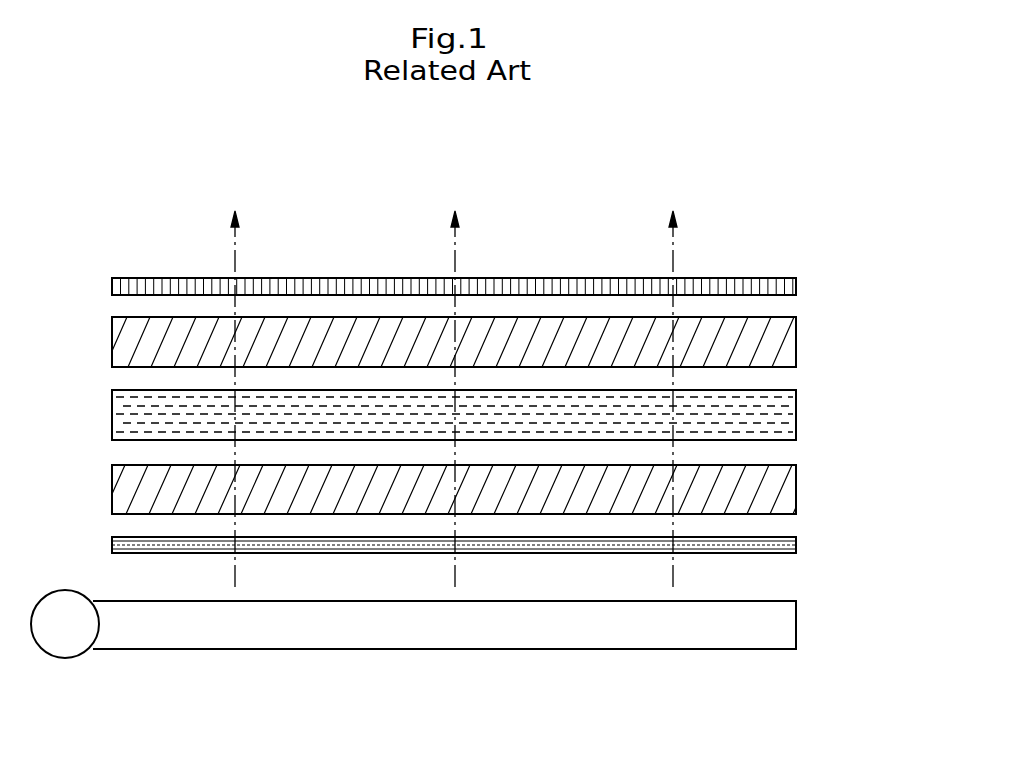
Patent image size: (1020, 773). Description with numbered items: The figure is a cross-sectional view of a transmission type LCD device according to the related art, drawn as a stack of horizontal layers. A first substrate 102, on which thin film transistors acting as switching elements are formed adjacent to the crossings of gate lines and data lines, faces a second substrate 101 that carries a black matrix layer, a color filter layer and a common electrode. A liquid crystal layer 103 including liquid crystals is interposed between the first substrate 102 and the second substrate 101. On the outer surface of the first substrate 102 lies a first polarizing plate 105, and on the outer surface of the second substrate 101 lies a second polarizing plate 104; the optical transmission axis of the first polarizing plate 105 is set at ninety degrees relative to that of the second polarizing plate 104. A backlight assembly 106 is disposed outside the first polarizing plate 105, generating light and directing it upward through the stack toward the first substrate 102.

The second substrate 101 is at (797, 342).
The first substrate 102 is at (797, 489).
The liquid crystal layer 103 is at (797, 414).
The second polarizing plate 104 is at (797, 288).
The first polarizing plate 105 is at (797, 545).
The backlight assembly 106 is at (797, 625).